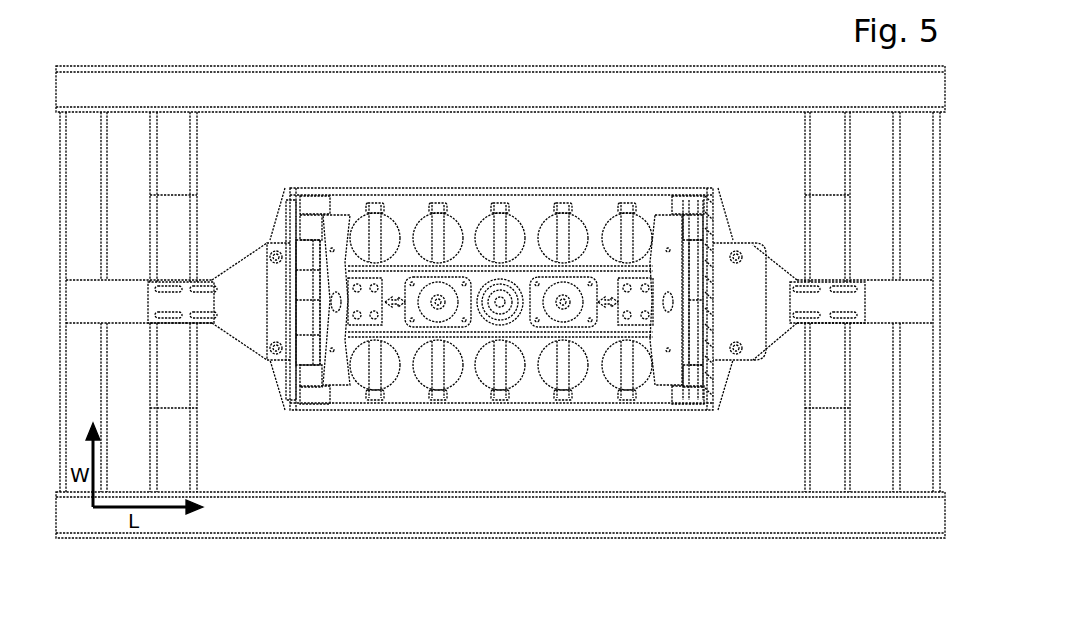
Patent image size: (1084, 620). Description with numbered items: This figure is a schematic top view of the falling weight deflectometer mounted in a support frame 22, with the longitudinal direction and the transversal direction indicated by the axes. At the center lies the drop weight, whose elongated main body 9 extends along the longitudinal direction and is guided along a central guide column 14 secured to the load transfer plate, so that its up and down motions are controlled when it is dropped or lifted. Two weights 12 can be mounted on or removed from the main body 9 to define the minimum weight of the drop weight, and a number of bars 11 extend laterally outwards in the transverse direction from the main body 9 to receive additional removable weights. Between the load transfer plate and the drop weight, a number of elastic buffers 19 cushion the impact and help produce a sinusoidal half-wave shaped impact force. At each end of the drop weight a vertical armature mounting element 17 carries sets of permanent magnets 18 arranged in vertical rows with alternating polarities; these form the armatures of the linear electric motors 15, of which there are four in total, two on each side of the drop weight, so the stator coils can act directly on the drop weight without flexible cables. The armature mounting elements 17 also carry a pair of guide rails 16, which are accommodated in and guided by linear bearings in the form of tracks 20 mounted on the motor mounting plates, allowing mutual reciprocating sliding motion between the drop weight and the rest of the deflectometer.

The main body 9 is at (396, 283).
The bars 11 is at (562, 372).
The weights 12 is at (565, 295).
The central guide column 14 is at (500, 300).
The linear electric motors 15 is at (303, 343).
The guide rails 16 is at (680, 383).
The armature mounting elements 17 is at (337, 233).
The permanent magnets 18 is at (322, 343).
The elastic buffers 19 is at (487, 367).
The tracks 20 is at (712, 400).
The support frame 22 is at (658, 82).